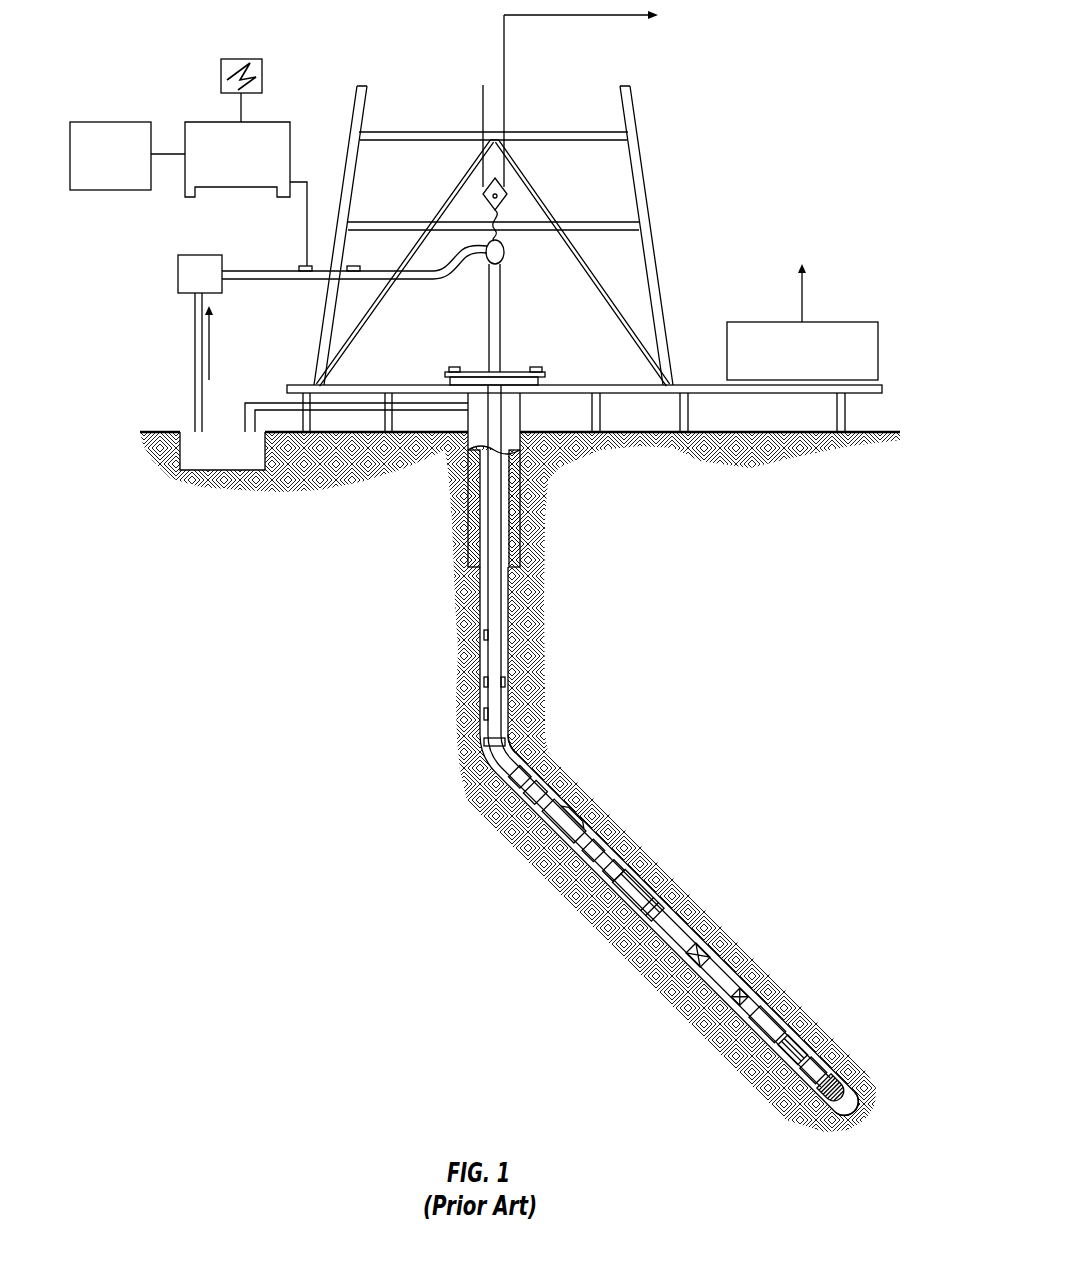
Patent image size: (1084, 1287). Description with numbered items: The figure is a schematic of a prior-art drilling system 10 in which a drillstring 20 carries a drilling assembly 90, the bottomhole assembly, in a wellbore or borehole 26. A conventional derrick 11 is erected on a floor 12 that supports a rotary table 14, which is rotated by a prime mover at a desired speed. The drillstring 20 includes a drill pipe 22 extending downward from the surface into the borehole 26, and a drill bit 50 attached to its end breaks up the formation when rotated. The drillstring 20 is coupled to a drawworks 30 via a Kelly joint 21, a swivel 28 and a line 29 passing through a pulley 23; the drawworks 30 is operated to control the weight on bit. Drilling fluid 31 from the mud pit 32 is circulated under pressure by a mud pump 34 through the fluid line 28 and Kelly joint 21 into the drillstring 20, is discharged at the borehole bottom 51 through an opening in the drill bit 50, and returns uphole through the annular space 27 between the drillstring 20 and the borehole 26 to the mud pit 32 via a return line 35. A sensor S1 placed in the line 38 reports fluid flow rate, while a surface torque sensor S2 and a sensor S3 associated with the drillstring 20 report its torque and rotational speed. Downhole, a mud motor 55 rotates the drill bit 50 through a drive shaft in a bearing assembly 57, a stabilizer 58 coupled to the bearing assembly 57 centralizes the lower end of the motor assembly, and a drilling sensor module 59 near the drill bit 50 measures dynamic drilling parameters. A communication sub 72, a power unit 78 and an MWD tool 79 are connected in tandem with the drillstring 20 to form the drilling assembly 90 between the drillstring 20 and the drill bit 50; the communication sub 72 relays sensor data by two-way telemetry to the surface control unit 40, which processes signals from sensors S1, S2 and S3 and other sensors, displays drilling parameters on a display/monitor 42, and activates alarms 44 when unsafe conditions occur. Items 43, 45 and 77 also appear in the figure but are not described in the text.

The drilling system 10 is at (423, 32).
The derrick 11 is at (648, 198).
The floor 12 is at (684, 384).
The rotary table 14 is at (512, 368).
The drillstring 20 is at (503, 635).
The Kelly joint 21 is at (505, 283).
The drill pipe 22 is at (480, 612).
The pulley 23 is at (500, 207).
The wellbore 26 is at (513, 742).
The annular space 27 is at (522, 767).
The swivel 28 is at (491, 268).
The line 29 is at (507, 118).
The drawworks 30 is at (866, 322).
The drilling fluid 31 is at (205, 455).
The mud pit 32 is at (248, 470).
The mud pump 34 is at (178, 268).
The return line 35 is at (443, 412).
The line 38 is at (285, 281).
The surface control unit 40 is at (228, 121).
The display/monitor 42 is at (236, 58).
The sensor 43 is at (301, 265).
The alarms 44 is at (135, 121).
The signal line 45 is at (298, 178).
The drill bit 50 is at (849, 1080).
The borehole bottom 51 is at (830, 1125).
The downhole motor 55 is at (683, 925).
The bearing assembly 57 is at (790, 1030).
The stabilizer 58 is at (806, 1042).
The drilling sensor module 59 is at (806, 1070).
The communication sub 72 is at (485, 714).
The stabilizer 77 is at (545, 822).
The power unit 78 is at (492, 760).
The MWD tool 79 is at (520, 789).
The drilling assembly 90 is at (734, 793).
The sensor S1 is at (352, 264).
The surface torque sensor S2 is at (540, 366).
The sensor S3 is at (450, 366).